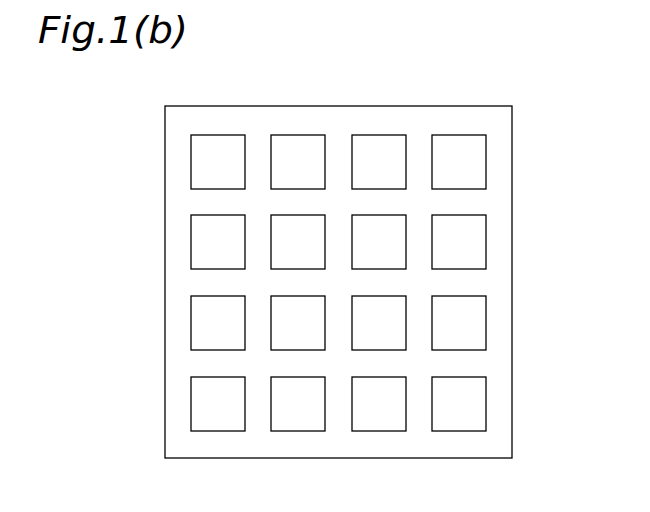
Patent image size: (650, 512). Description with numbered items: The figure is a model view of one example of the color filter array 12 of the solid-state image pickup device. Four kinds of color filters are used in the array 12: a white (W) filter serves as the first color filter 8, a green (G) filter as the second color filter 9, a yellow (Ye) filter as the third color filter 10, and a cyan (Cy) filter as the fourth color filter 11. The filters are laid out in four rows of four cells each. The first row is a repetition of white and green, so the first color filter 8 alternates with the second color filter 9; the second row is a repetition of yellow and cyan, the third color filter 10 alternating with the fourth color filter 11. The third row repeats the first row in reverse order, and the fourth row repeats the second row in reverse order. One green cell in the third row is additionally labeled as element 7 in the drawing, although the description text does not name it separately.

The green filter element 7 is at (191, 322).
The first color filter 8 is at (191, 160).
The second color filter 9 is at (283, 135).
The third color filter 10 is at (191, 240).
The fourth color filter 11 is at (283, 215).
The color filter array 12 is at (330, 106).